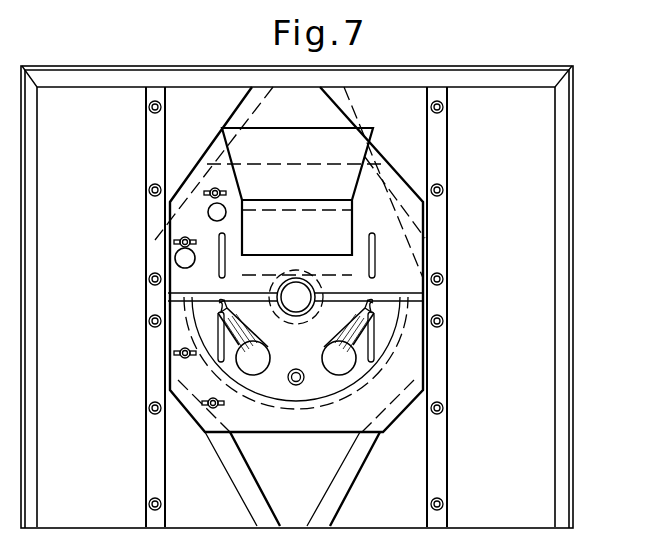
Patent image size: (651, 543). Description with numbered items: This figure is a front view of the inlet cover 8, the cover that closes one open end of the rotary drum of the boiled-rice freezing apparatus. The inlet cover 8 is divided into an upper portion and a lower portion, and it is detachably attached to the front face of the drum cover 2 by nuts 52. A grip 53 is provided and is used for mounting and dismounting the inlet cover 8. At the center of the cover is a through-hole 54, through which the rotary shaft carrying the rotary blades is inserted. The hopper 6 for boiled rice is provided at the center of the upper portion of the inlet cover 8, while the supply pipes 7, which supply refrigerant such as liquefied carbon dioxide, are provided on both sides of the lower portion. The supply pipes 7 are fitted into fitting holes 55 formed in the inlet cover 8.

The drum cover 2 is at (575, 143).
The hopper 6 is at (355, 188).
The supply pipe 7 is at (314, 390).
The inlet cover 8 is at (410, 143).
The nuts 52 is at (180, 240).
The grip 53 is at (376, 325).
The through-hole 54 is at (297, 290).
The fitting holes 55 is at (262, 350).